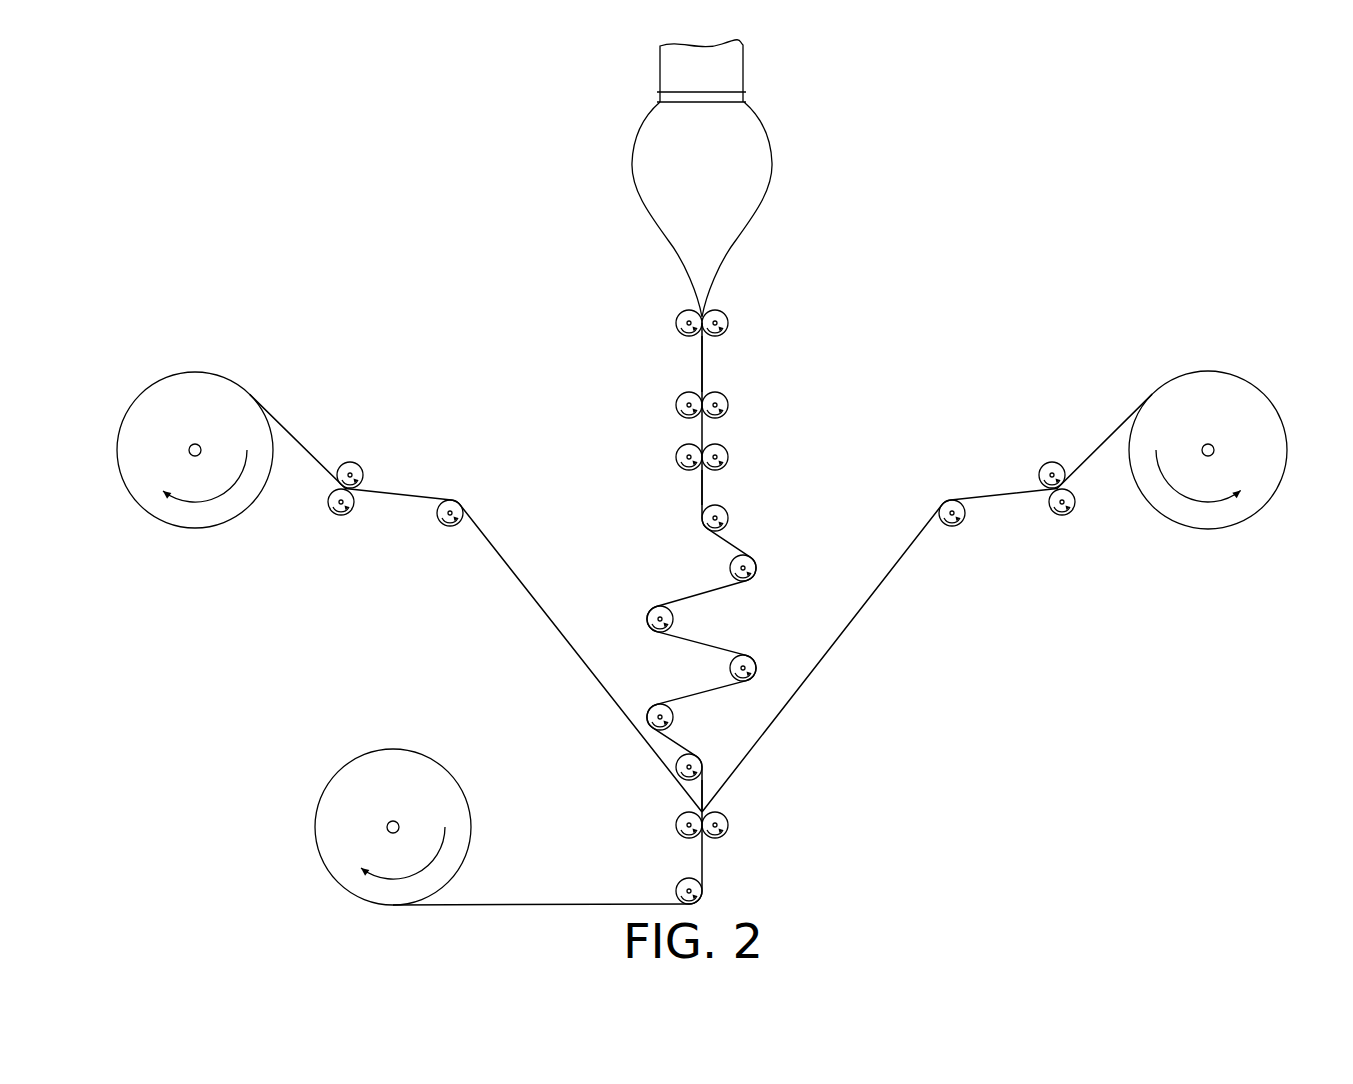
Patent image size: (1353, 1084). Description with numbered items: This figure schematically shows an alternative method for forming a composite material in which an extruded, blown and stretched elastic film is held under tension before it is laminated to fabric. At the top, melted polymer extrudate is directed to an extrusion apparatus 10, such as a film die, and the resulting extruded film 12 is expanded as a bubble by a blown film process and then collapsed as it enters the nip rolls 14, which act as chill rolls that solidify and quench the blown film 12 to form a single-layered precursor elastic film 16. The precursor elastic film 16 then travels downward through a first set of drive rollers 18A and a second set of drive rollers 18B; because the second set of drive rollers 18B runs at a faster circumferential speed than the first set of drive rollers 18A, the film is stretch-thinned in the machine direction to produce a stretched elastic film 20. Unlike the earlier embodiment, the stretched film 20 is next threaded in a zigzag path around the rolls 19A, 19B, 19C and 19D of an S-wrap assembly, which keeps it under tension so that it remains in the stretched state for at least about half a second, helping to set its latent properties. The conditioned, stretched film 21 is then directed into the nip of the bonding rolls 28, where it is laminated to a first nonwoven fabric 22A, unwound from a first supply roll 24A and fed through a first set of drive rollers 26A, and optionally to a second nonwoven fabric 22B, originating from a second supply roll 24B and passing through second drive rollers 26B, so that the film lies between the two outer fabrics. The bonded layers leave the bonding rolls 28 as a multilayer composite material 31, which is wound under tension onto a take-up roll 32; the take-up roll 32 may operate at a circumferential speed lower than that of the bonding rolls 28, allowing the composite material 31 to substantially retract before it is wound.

The extrusion apparatus 10 is at (732, 73).
The extruded film 12 is at (752, 170).
The nip rolls 14 is at (718, 317).
The precursor elastic film 16 is at (703, 362).
The first set of drive rollers 18A is at (681, 399).
The second set of drive rollers 18B is at (676, 458).
The stretched elastic film 20 is at (703, 496).
The S-wrap assembly roll 19A is at (730, 567).
The S-wrap assembly roll 19B is at (673, 619).
The S-wrap assembly roll 19C is at (730, 667).
The S-wrap assembly roll 19D is at (673, 717).
The conditioned stretched film 21 is at (703, 798).
The bonding rolls 28 is at (728, 826).
The first nonwoven fabric 22A is at (1001, 494).
The second nonwoven fabric 22B is at (402, 494).
The first supply roll 24A is at (1187, 388).
The second supply roll 24B is at (215, 390).
The first set of drive rollers 26A is at (1064, 510).
The second drive rollers 26B is at (338, 508).
The composite material 31 is at (555, 903).
The take-up roll 32 is at (432, 770).